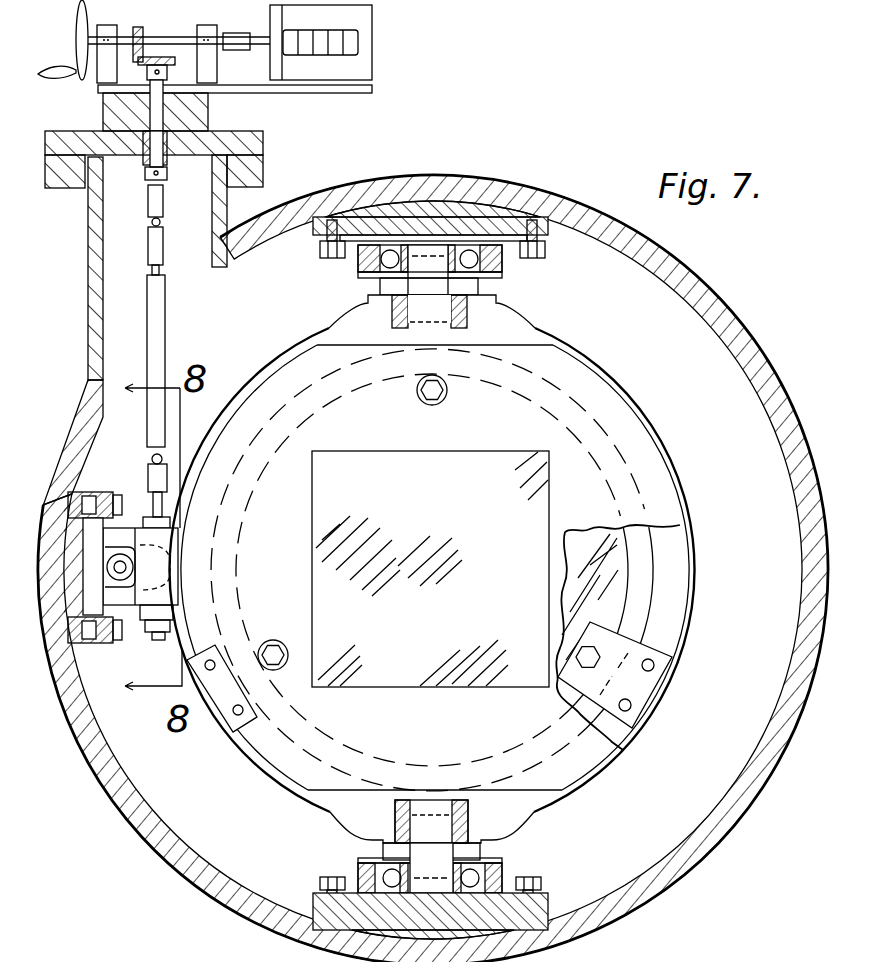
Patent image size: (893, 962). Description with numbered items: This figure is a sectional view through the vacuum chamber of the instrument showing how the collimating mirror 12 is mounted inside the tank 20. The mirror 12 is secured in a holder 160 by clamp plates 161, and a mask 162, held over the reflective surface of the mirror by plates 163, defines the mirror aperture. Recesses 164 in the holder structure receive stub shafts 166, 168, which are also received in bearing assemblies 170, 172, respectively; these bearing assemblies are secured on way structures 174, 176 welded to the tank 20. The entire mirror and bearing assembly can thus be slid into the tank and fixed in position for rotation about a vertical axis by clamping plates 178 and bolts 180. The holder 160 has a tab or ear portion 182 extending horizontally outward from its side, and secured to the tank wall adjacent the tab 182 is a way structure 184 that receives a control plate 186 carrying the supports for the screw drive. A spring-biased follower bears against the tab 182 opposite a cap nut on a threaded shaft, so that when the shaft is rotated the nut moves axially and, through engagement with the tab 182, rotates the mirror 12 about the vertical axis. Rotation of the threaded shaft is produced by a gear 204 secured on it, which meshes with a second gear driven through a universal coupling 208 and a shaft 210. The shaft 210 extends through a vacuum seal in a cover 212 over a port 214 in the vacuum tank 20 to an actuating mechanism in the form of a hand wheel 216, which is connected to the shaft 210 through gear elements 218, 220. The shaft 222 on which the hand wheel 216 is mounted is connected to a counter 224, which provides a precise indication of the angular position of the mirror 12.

The mirror 12 is at (623, 590).
The tank 20 is at (762, 348).
The holder 160 is at (690, 620).
The clamp plates 161 is at (660, 690).
The mask 162 is at (600, 463).
The plates 163 is at (225, 712).
The recesses 164 is at (505, 330).
The stub shaft 166 is at (480, 286).
The stub shaft 168 is at (480, 858).
The bearing assembly 170 is at (480, 247).
The bearing assembly 172 is at (510, 882).
The way structure 174 is at (440, 225).
The way structure 176 is at (530, 905).
The clamping plates 178 is at (320, 256).
The bolts 180 is at (332, 260).
The tab 182 is at (100, 643).
The way structure 184 is at (58, 690).
The control plate 186 is at (115, 525).
The gear 204 is at (695, 950).
The universal coupling 208 is at (153, 456).
The shaft 210 is at (165, 330).
The cover 212 is at (263, 140).
The port 214 is at (255, 178).
The hand wheel 216 is at (76, 40).
The gear element 218 is at (140, 35).
The gear element 220 is at (235, 108).
The shaft 222 is at (240, 33).
The counter 224 is at (372, 50).